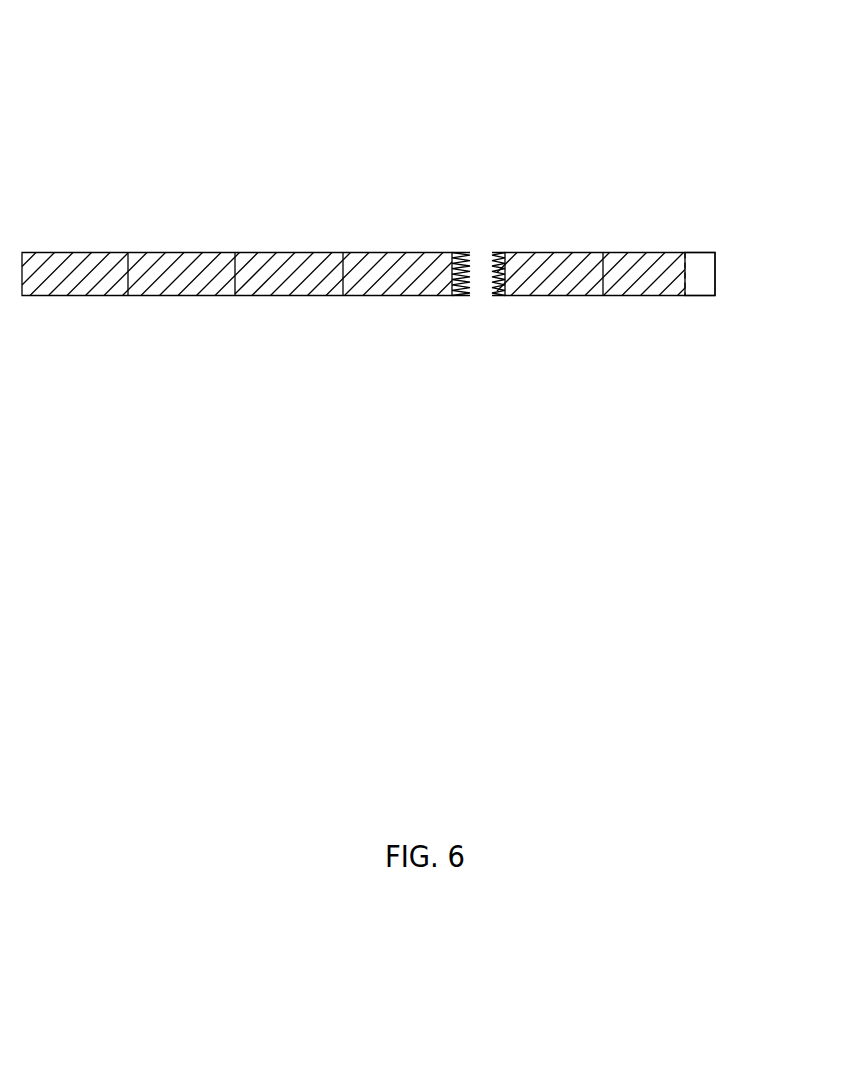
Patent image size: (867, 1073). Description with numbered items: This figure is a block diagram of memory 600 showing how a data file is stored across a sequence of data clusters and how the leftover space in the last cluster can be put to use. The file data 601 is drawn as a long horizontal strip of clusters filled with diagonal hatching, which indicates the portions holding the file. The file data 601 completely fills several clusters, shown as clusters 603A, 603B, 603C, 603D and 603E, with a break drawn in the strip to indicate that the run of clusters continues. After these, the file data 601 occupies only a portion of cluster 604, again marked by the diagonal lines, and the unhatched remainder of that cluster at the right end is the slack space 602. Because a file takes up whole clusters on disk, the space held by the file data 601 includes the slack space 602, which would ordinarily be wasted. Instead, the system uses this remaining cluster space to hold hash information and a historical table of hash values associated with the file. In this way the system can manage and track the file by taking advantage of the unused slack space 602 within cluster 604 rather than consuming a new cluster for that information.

The memory 600 is at (150, 110).
The file data 601 is at (22, 246).
The slack space 602 is at (688, 305).
The cluster 603A is at (67, 295).
The cluster 603B is at (152, 297).
The cluster 603C is at (258, 297).
The cluster 603D is at (365, 297).
The cluster 603E is at (515, 302).
The cluster 604 is at (615, 302).